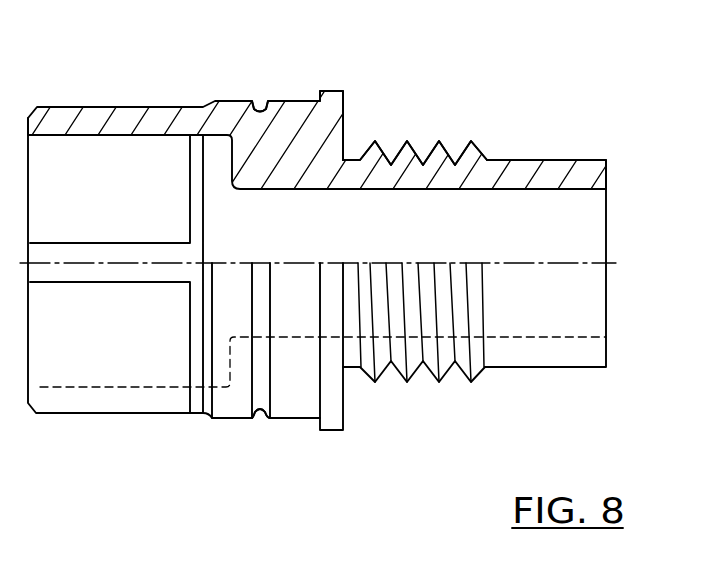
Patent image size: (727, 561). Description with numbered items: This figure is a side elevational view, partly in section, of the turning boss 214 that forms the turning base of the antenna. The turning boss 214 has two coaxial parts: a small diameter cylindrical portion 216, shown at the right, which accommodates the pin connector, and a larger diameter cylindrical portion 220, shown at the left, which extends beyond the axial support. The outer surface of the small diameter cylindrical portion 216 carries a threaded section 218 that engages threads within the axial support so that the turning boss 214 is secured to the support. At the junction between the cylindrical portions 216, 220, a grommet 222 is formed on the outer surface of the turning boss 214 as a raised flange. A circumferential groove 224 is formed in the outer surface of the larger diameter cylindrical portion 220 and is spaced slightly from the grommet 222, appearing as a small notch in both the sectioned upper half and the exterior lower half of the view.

The turning boss 214 is at (527, 101).
The small diameter cylindrical portion 216 is at (563, 160).
The threaded section 218 is at (445, 376).
The larger diameter cylindrical portion 220 is at (100, 414).
The grommet 222 is at (332, 430).
The circumferential groove 224 is at (262, 110).